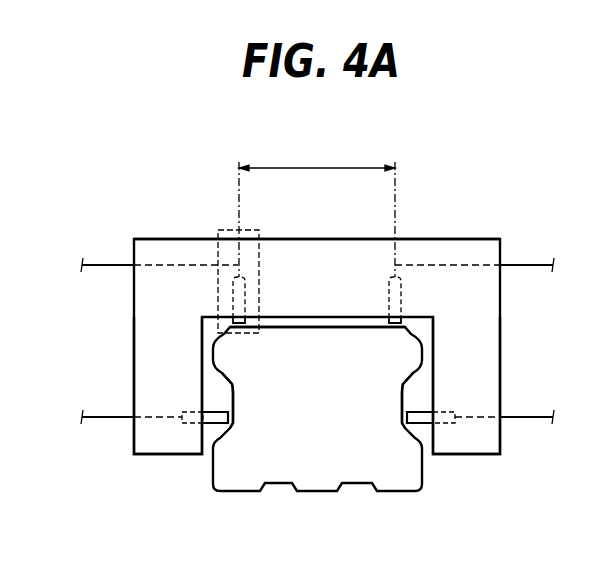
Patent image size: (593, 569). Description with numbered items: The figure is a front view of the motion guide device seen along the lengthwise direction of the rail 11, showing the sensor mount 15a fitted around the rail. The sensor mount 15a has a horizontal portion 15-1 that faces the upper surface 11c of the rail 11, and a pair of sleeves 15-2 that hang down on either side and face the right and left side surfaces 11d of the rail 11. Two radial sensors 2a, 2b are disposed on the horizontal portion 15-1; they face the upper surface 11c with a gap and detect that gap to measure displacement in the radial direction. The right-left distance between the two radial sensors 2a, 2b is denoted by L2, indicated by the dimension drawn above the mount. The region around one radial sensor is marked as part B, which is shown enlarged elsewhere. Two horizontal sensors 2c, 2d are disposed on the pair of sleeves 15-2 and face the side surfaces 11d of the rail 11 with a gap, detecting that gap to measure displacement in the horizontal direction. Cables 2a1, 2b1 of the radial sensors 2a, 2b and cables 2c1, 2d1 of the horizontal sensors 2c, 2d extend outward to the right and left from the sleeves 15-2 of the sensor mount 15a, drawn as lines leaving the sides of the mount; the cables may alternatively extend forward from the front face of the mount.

The rail 11 is at (355, 466).
The upper surface of the rail 11c is at (327, 329).
The side surfaces of the rail 11d is at (237, 404).
The horizontal portion 15-1 is at (325, 254).
The sleeves 15-2 is at (150, 352).
The sensor mount 15a is at (491, 238).
The radial sensor 2a is at (233, 297).
The radial sensor 2b is at (401, 297).
The cable 2a1 is at (98, 262).
The cable 2b1 is at (527, 262).
The horizontal sensor 2c is at (201, 425).
The horizontal sensor 2d is at (437, 426).
The cable 2c1 is at (98, 420).
The cable 2d1 is at (525, 420).
The part B is at (226, 230).
The distance between the two radial sensors L2 is at (317, 207).